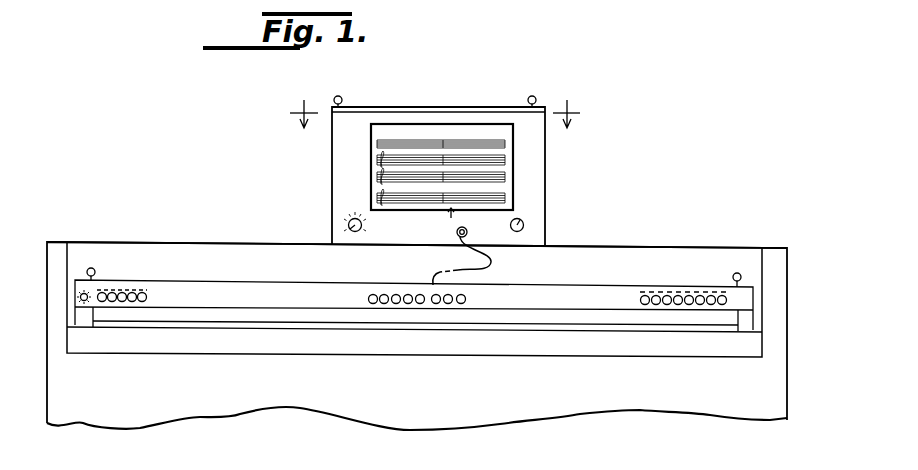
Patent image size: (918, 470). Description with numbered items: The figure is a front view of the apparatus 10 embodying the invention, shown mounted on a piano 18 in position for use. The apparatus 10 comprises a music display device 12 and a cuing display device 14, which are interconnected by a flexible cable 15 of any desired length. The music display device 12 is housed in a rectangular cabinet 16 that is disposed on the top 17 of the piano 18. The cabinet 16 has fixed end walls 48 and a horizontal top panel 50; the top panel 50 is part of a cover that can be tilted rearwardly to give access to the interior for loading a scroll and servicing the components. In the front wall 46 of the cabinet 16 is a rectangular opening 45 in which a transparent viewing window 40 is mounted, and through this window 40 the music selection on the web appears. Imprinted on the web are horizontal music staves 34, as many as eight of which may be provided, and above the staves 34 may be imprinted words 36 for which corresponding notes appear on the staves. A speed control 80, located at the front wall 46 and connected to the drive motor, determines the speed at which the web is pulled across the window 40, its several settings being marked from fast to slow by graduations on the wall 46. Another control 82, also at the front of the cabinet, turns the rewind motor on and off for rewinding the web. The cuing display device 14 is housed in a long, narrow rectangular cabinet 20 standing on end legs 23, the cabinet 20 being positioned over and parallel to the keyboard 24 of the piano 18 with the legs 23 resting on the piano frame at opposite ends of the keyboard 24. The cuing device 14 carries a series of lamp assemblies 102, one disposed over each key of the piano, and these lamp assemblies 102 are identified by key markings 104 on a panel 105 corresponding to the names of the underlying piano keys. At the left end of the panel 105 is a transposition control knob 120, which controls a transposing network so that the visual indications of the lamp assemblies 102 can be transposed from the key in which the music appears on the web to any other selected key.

The apparatus 10 is at (305, 200).
The music display device 12 is at (548, 214).
The cuing display device 14 is at (634, 282).
The flexible cable 15 is at (499, 263).
The rectangular cabinet 16 is at (515, 165).
The top of piano 17 is at (152, 243).
The piano 18 is at (48, 354).
The cabinet 20 is at (75, 283).
The end legs 23 is at (80, 319).
The keyboard 24 is at (360, 336).
The music staves 34 is at (378, 144).
The words 36 is at (393, 128).
The transparent viewing window 40 is at (378, 170).
The rectangular opening 45 is at (378, 179).
The front wall 46 is at (548, 187).
The end walls 48 is at (546, 147).
The top panel 50 is at (497, 112).
The speed control 80 is at (347, 223).
The control 82 is at (525, 225).
The lamp assemblies 102 is at (110, 278).
The key markings 104 is at (380, 285).
The panel 105 is at (209, 320).
The transposition control knob 120 is at (78, 297).